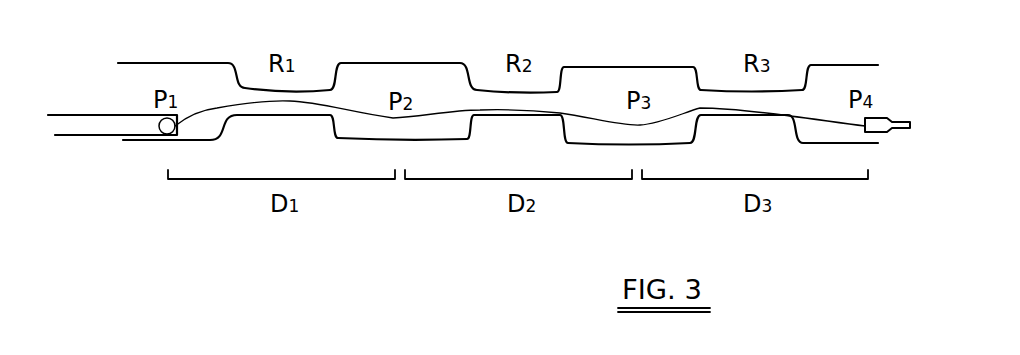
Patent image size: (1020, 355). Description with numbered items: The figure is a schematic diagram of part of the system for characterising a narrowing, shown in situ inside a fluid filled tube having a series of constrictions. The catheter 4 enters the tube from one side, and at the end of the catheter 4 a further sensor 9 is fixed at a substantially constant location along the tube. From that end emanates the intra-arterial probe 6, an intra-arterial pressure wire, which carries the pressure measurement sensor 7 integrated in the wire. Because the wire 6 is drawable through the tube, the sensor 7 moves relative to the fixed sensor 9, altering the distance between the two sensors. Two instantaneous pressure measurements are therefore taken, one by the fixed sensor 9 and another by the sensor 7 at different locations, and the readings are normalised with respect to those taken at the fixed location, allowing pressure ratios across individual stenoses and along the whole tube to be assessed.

The catheter 4 is at (113, 115).
The further sensor 9 is at (180, 118).
The intra-arterial probe 6 is at (590, 117).
The pressure measurement sensor 7 is at (902, 121).